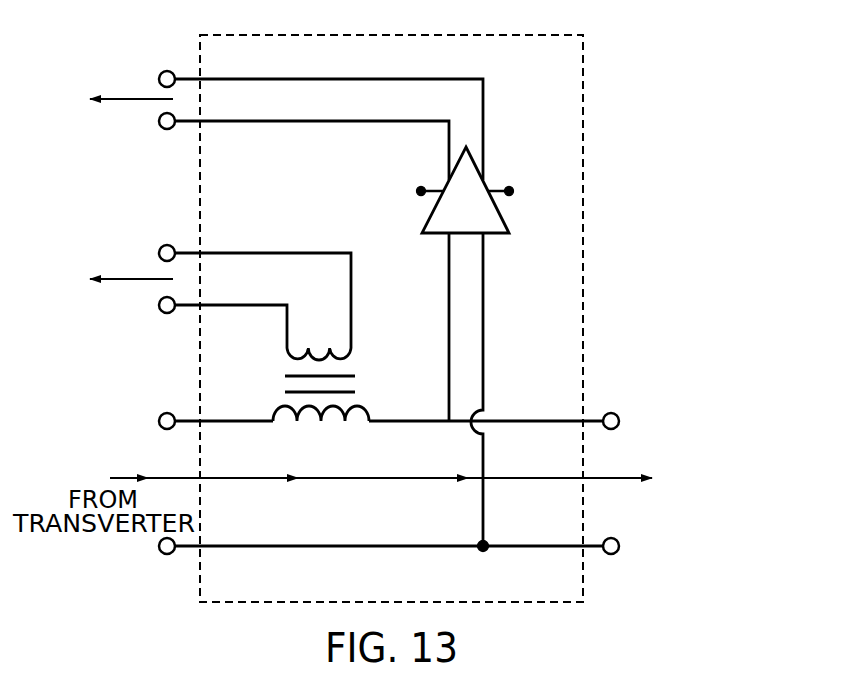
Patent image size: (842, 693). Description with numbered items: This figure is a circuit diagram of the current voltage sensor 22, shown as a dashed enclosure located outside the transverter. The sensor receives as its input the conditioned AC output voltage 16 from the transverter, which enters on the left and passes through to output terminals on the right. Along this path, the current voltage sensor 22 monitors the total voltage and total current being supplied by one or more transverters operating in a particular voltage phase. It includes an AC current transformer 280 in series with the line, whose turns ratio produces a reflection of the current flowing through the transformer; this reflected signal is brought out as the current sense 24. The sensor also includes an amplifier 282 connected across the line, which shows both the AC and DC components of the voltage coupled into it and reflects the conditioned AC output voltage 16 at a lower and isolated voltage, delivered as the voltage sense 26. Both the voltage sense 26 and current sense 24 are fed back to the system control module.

The conditioned AC output voltage 16 is at (597, 477).
The current voltage sensor 22 is at (583, 205).
The current sense 24 is at (133, 279).
The voltage sense 26 is at (132, 99).
The AC current transformer 280 is at (348, 383).
The amplifier 282 is at (500, 234).